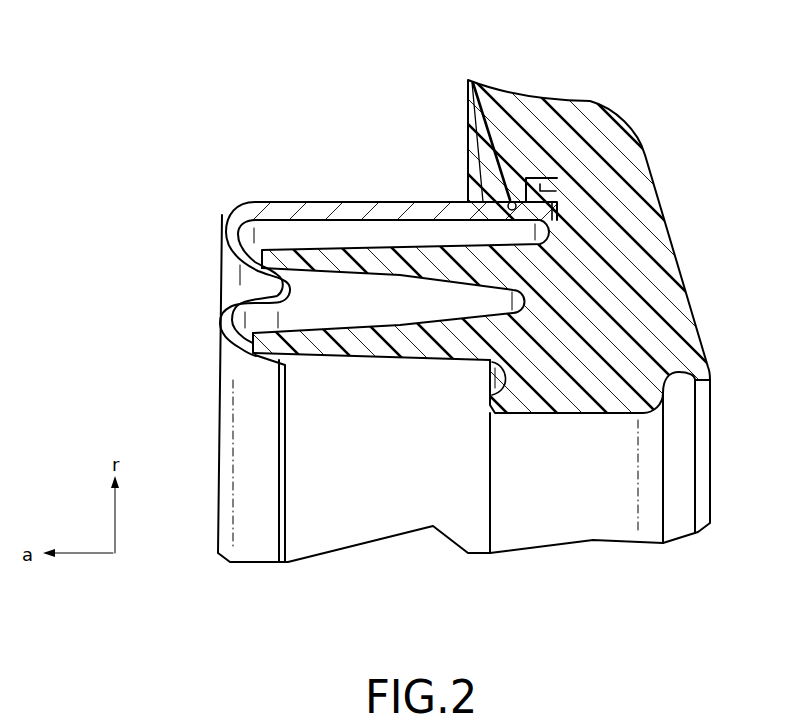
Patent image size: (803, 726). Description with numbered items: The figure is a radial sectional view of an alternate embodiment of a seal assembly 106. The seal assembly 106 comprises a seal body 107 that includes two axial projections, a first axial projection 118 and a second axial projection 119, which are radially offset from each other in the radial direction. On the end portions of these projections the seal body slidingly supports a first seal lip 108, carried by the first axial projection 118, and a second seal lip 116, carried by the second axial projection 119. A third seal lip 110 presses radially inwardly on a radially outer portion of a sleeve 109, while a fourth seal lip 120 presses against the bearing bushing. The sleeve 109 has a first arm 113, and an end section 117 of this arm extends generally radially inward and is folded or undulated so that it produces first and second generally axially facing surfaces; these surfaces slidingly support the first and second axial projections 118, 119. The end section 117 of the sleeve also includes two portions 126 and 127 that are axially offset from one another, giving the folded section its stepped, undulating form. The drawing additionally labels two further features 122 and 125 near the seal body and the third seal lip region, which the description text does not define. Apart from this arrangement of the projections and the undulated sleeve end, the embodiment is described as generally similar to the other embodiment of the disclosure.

The seal assembly 106 is at (694, 96).
The seal body 107 is at (593, 143).
The first seal lip 108 is at (275, 262).
The sleeve 109 is at (332, 212).
The third seal lip 110 is at (510, 201).
The first arm 113 is at (423, 210).
The second seal lip 116 is at (261, 360).
The end section 117 is at (196, 287).
The first axial projection 118 is at (367, 257).
The second axial projection 119 is at (405, 352).
The fourth seal lip 120 is at (473, 85).
The groove 122 is at (533, 187).
The shoulder 125 is at (553, 192).
The first portion of end section 126 is at (236, 218).
The second portion of end section 127 is at (218, 330).